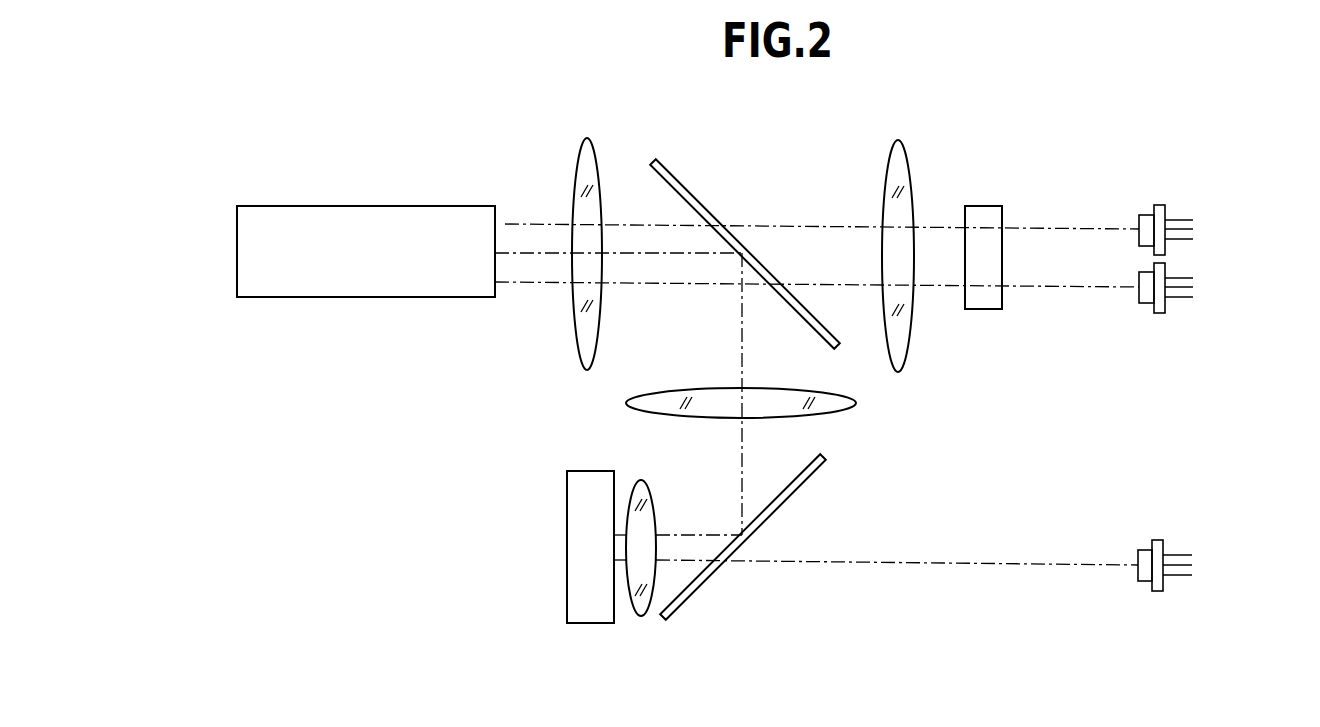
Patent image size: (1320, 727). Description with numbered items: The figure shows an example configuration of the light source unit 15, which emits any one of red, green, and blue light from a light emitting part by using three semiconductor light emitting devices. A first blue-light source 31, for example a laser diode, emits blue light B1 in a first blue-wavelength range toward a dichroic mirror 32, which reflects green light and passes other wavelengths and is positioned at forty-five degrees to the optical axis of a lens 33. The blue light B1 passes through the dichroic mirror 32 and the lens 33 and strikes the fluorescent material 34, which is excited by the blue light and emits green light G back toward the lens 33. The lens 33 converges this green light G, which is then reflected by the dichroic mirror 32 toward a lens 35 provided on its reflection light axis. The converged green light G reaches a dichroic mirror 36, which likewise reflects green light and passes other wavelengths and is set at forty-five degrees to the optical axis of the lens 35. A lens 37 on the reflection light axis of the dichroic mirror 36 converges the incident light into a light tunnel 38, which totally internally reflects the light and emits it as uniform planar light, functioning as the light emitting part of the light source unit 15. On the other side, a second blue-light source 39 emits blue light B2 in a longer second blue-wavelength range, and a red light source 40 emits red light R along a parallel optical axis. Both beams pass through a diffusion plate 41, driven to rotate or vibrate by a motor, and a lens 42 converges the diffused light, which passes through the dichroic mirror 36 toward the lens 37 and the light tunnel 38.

The light source unit 15 is at (1262, 612).
The first blue-light source 31 is at (1157, 540).
The dichroic mirror 32 is at (782, 512).
The lens 33 is at (641, 480).
The fluorescent material 34 is at (567, 556).
The lens 35 is at (700, 387).
The dichroic mirror 36 is at (703, 193).
The lens 37 is at (572, 172).
The light tunnel 38 is at (415, 206).
The second blue-light source 39 is at (1157, 205).
The red light source 40 is at (1160, 313).
The diffusion plate 41 is at (983, 206).
The lens 42 is at (882, 172).
The blue light B1 is at (982, 563).
The blue light B2 is at (1068, 228).
The red light R is at (1065, 287).
The green light G is at (685, 533).